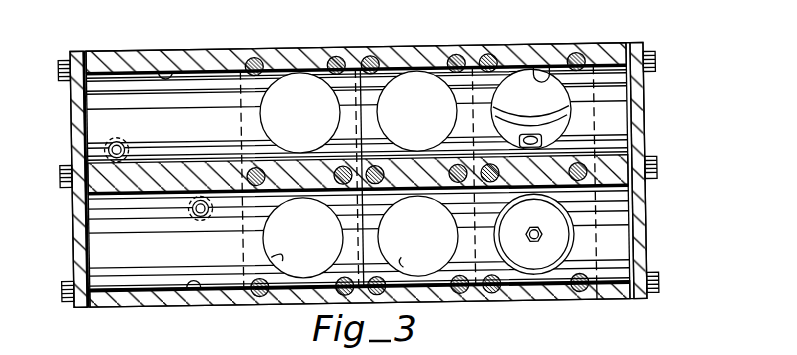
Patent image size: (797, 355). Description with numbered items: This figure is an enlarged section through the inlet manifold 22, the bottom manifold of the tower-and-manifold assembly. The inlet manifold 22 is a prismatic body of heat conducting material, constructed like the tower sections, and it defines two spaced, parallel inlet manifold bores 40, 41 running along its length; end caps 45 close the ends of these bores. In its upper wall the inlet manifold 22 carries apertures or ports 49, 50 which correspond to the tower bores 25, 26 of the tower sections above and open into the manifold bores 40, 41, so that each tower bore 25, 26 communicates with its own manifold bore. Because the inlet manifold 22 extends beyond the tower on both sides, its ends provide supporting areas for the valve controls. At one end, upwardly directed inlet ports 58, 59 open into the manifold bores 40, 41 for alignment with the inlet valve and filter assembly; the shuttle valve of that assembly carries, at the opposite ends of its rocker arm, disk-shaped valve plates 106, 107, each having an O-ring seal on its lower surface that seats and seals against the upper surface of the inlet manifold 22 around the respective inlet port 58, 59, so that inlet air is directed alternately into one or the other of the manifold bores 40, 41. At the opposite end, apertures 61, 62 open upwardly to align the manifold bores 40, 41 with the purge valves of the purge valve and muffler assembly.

The inlet manifold 22 is at (486, 44).
The tower bore 25 is at (302, 258).
The tower bore 26 is at (304, 99).
The inlet manifold bore 40 is at (192, 290).
The inlet manifold bore 41 is at (184, 72).
The end cap 45 is at (72, 133).
The port 49 is at (281, 262).
The port 50 is at (283, 82).
The inlet port 58 is at (552, 243).
The inlet port 59 is at (543, 68).
The aperture 61 is at (193, 214).
The aperture 62 is at (124, 142).
The valve plate 106 is at (603, 299).
The valve plate 107 is at (547, 119).